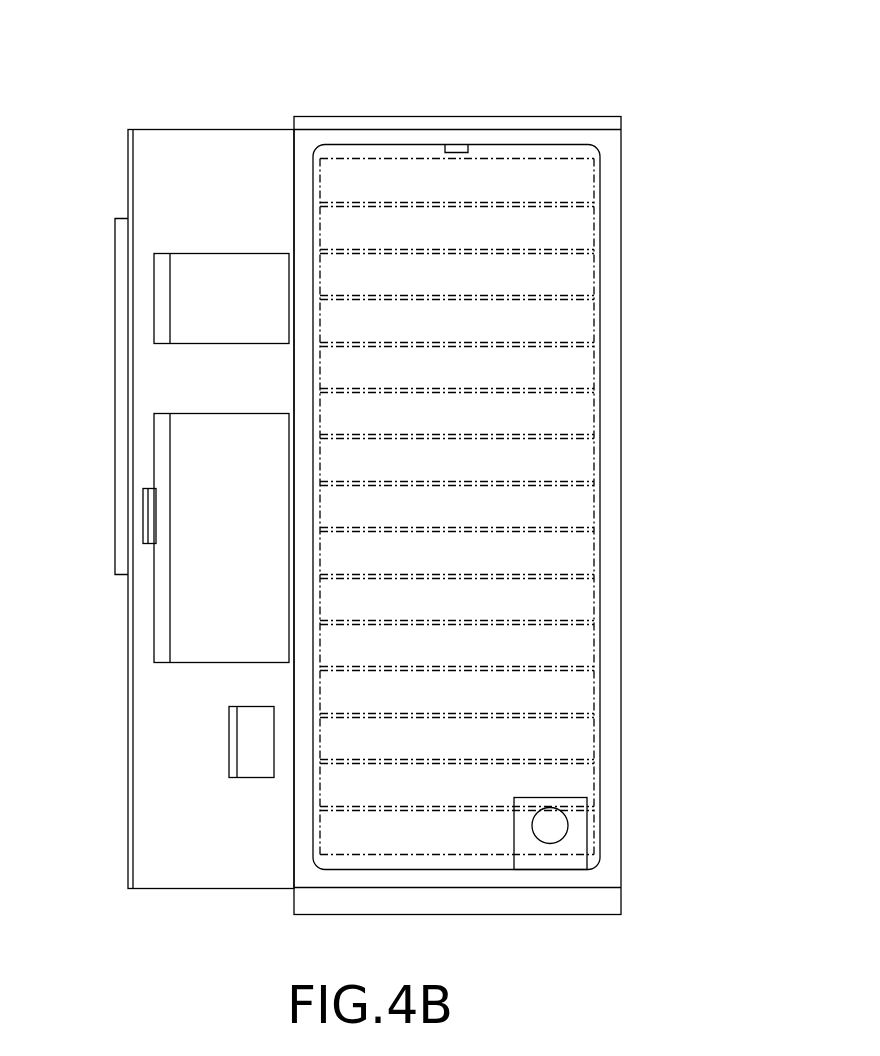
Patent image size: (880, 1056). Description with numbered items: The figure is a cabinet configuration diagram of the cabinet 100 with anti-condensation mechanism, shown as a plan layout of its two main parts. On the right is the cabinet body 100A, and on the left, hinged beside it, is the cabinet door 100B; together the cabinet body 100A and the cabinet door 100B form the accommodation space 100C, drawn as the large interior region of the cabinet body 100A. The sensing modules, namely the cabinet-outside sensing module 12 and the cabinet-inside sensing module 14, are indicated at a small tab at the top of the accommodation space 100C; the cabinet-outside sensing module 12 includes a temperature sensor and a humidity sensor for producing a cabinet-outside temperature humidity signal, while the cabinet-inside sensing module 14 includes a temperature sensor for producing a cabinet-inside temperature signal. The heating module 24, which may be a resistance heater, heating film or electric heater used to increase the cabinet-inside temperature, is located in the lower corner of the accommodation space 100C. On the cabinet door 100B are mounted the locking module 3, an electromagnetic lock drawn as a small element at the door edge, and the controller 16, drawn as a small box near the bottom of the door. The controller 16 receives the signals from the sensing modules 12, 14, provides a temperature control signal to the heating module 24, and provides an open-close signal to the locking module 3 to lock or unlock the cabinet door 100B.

The cabinet 100 is at (389, 43).
The cabinet body 100A is at (613, 243).
The cabinet door 100B is at (177, 150).
The accommodation space 100C is at (599, 323).
The cabinet-outside sensing module 12 is at (521, 111).
The cabinet-inside sensing module 14 is at (458, 145).
The locking module 3 is at (148, 518).
The controller 16 is at (255, 768).
The heating module 24 is at (577, 833).